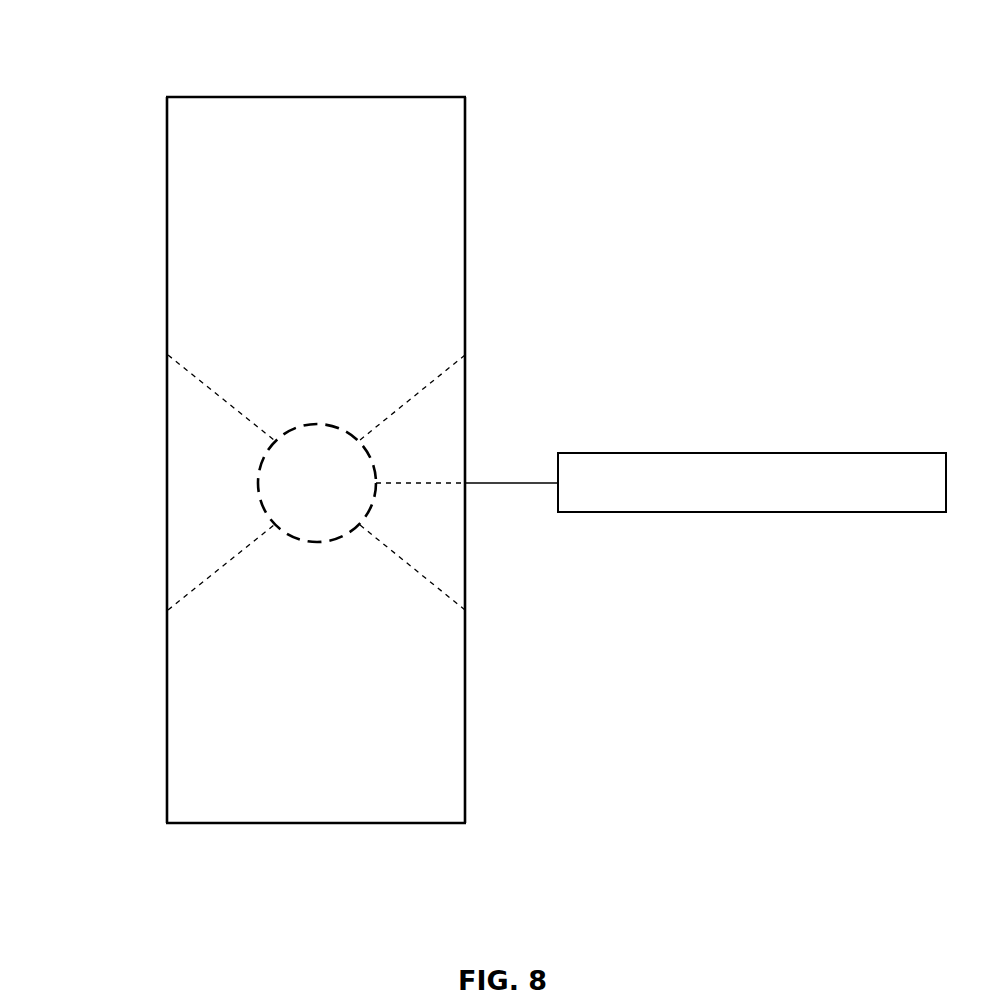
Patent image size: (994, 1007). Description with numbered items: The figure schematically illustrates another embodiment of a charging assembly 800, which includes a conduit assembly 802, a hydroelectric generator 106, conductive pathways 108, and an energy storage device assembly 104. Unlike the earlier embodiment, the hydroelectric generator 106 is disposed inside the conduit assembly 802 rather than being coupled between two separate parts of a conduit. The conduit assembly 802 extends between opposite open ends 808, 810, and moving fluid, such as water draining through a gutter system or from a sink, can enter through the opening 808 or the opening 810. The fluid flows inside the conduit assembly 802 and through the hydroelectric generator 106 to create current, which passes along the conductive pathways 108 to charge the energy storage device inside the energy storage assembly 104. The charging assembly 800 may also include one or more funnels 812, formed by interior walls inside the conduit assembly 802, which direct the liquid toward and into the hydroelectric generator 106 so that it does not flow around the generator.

The charging assembly 800 is at (79, 185).
The conduit assembly 802 is at (466, 196).
The open end 808 is at (280, 117).
The open end 810 is at (257, 805).
The hydroelectric generator 106 is at (320, 540).
The funnels 812 is at (413, 400).
The conductive pathways 108 is at (497, 483).
The energy storage device assembly 104 is at (753, 512).